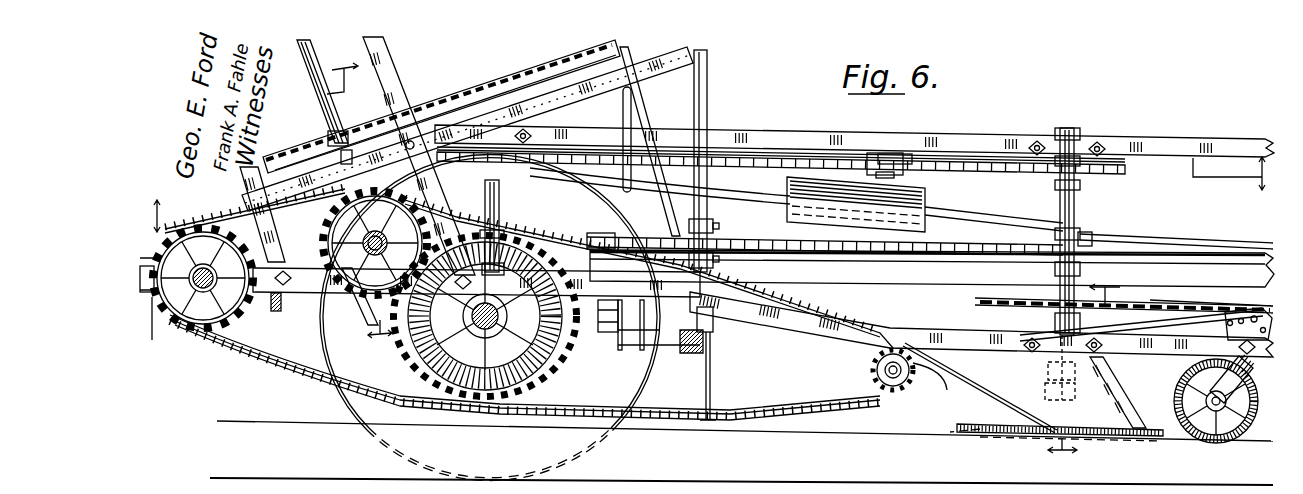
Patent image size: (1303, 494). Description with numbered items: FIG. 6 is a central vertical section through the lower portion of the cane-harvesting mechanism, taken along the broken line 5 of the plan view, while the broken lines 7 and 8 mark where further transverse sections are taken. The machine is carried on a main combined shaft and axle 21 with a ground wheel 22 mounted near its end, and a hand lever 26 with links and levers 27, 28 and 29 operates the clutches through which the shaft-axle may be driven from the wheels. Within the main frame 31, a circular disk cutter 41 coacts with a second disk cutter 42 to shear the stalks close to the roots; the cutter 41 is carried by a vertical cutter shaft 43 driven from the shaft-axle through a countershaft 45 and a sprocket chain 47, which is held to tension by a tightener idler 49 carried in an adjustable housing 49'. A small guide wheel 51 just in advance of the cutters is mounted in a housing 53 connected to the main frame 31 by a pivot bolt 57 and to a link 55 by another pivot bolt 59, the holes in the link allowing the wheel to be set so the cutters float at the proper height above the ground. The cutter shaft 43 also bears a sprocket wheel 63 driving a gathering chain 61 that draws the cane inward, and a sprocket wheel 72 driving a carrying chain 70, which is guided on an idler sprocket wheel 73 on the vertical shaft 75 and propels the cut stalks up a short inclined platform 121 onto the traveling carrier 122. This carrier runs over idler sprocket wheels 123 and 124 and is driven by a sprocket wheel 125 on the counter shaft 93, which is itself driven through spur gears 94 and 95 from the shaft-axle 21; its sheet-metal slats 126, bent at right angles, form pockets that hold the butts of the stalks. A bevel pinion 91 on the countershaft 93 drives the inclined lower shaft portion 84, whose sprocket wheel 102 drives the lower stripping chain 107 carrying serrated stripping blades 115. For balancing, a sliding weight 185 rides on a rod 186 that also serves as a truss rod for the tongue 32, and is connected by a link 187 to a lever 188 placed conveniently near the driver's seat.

The lower shaft portion 84 is at (313, 83).
The broken line 7 is at (359, 203).
The sprocket wheel 102 is at (340, 135).
The stripping chain 107 is at (484, 88).
The stripping blades 115 is at (515, 74).
The sprocket chain 47 is at (585, 157).
The hand lever 26 is at (622, 124).
The lever 188 is at (648, 127).
The vertical shaft 75 is at (708, 80).
The link 187 is at (745, 190).
The tightener idler 49 is at (896, 137).
The adjustable housing 49' is at (908, 172).
The sliding weight 185 is at (928, 205).
The cutter shaft 43 is at (1070, 128).
The rod 186 is at (1008, 222).
The sprocket wheel 72 is at (1090, 240).
The tongue 32 is at (1245, 245).
The broken line 5 is at (709, 194).
The spur gear 94 is at (355, 243).
The sprocket wheel 125 is at (330, 262).
The counter shaft 93 is at (372, 300).
The bevel pinion 91 is at (290, 306).
The idler sprocket wheel 124 is at (245, 318).
The main frame 31 is at (935, 318).
The traveling carrier 122 is at (283, 372).
The slats 126 is at (278, 365).
The ground wheel 22 is at (338, 398).
The main combined shaft and axle 21 is at (428, 400).
The countershaft 45 is at (500, 210).
The idler sprocket wheel 73 is at (705, 238).
The carrying chain 70 is at (778, 240).
The link 27 is at (601, 316).
The lever 28 is at (498, 347).
The spur gear 95 is at (563, 377).
The link 29 is at (632, 358).
The idler sprocket wheel 123 is at (870, 368).
The inclined platform 121 is at (977, 390).
The sprocket wheel 63 is at (1045, 300).
The broken line 8 is at (1084, 368).
The gathering chain 61 is at (1180, 300).
The pivot bolt 59 is at (1255, 318).
The link 55 is at (1193, 330).
The pivot bolt 57 is at (1238, 347).
The housing 53 is at (1215, 377).
The guide wheel 51 is at (1177, 390).
The circular disk cutter 41 is at (1150, 416).
The circular disk cutter 42 is at (1048, 433).